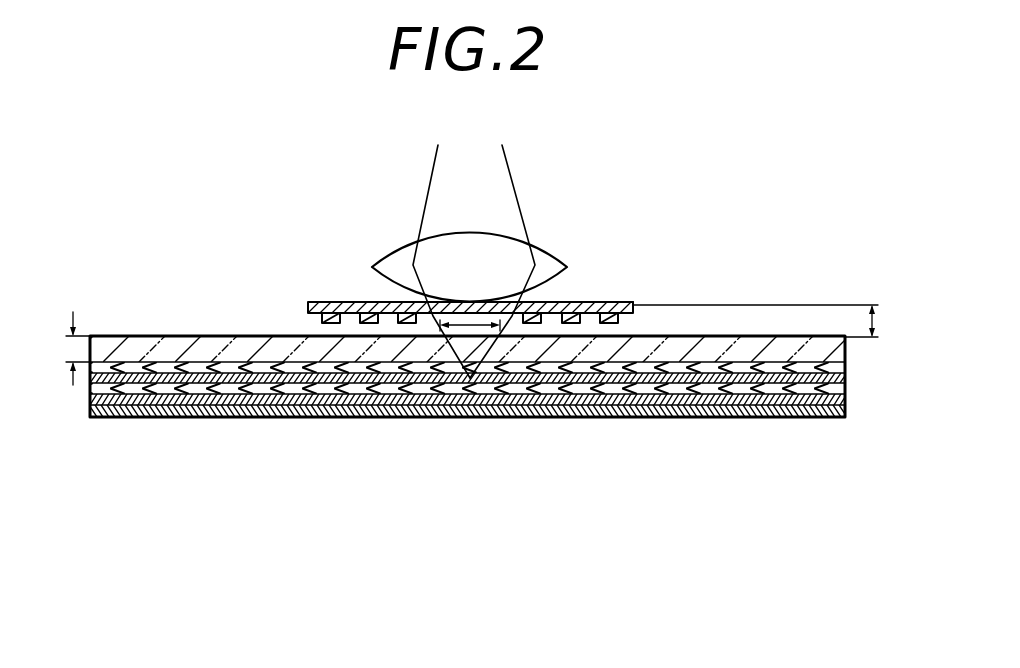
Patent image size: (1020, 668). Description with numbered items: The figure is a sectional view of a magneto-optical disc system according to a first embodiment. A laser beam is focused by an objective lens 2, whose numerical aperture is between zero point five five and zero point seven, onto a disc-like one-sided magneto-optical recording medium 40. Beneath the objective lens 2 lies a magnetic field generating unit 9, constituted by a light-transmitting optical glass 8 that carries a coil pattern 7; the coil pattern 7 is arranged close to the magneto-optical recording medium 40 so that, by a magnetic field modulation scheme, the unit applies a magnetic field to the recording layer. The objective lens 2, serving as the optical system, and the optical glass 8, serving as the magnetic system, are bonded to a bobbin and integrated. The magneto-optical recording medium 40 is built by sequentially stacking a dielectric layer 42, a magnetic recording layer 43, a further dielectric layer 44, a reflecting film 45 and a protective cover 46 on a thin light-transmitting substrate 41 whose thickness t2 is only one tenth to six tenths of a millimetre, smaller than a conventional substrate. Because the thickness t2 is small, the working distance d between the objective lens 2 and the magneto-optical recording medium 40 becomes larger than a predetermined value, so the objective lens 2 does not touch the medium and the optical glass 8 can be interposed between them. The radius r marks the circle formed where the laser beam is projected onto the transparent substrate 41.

The magneto-optical recording medium 40 is at (508, 341).
The objective lens 2 is at (547, 265).
The coil pattern 7 is at (617, 324).
The light-transmitting optical glass 8 is at (306, 303).
The magnetic field generating unit 9 is at (577, 289).
The light-transmitting substrate 41 is at (848, 348).
The dielectric layer 42 is at (848, 366).
The magnetic recording layer 43 is at (848, 377).
The dielectric layer 44 is at (848, 387).
The reflecting film 45 is at (848, 398).
The protective cover 46 is at (847, 417).
The radius of laser beam circle r is at (467, 325).
The working distance d is at (875, 322).
The substrate thickness t2 is at (68, 335).